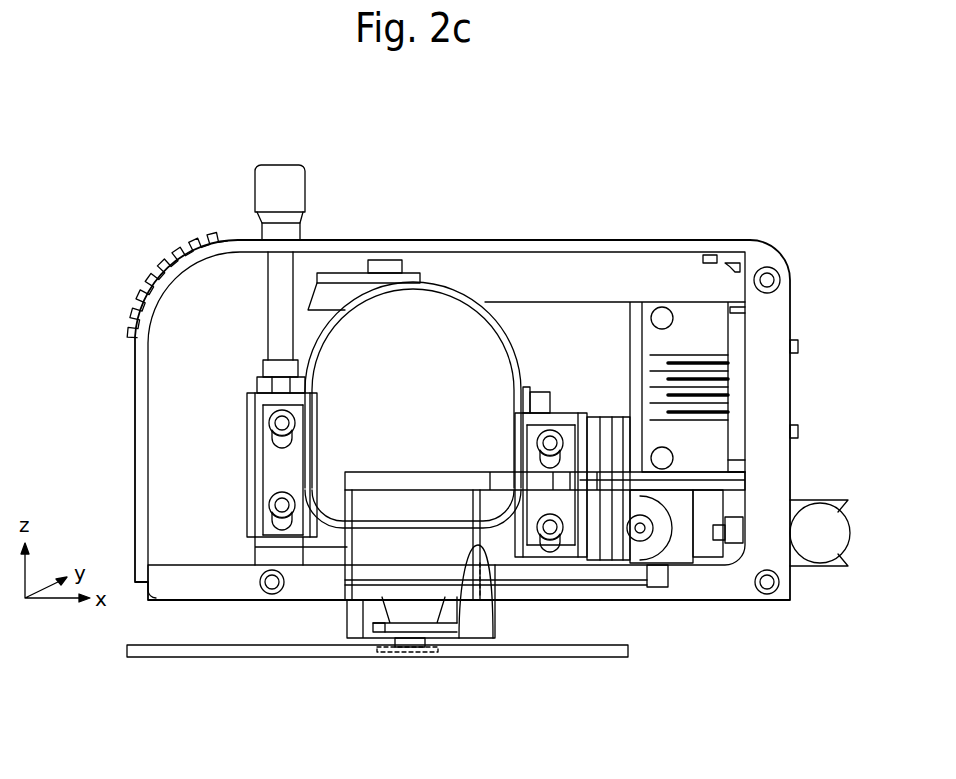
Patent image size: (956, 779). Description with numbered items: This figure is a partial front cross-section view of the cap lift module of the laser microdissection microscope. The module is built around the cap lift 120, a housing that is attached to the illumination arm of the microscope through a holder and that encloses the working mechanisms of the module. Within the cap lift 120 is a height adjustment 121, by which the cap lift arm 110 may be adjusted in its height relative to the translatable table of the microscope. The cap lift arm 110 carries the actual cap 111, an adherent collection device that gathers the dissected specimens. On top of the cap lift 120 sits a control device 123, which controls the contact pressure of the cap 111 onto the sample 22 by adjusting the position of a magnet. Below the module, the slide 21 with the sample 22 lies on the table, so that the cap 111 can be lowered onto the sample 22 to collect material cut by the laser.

The cap lift 120 is at (480, 248).
The control device 123 is at (293, 183).
The cap lift arm 110 is at (487, 355).
The height adjustment 121 is at (275, 450).
The cap 111 is at (415, 640).
The sample 22 is at (395, 652).
The slide 21 is at (590, 652).